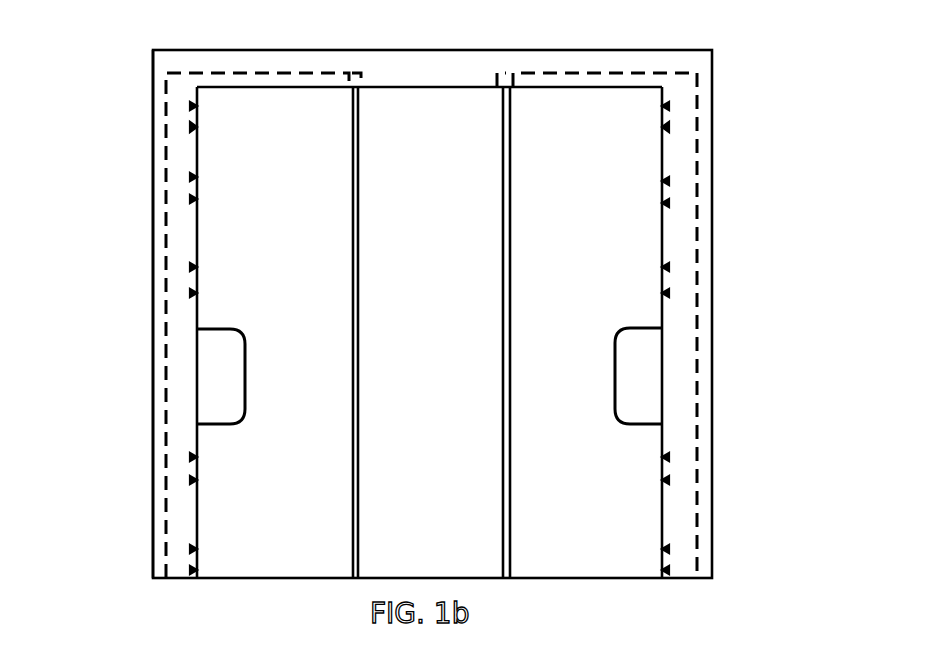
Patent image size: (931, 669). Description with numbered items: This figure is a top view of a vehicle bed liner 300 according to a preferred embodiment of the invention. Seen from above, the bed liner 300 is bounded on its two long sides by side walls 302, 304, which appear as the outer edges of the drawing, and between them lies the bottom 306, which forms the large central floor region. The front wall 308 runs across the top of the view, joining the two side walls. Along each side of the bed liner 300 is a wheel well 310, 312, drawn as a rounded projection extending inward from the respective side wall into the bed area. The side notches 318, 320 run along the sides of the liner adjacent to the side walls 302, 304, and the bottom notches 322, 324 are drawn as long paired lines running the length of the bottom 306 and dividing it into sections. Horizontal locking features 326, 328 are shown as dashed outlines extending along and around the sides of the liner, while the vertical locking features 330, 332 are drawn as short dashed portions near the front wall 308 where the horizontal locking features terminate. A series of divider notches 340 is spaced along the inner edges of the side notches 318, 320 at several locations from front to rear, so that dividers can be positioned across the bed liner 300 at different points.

The bed liner 300 is at (762, 157).
The side wall 302 is at (708, 217).
The side wall 304 is at (157, 162).
The bottom 306 is at (390, 350).
The front wall 308 is at (420, 75).
The wheel well 310 is at (648, 398).
The wheel well 312 is at (215, 377).
The side notch 318 is at (698, 343).
The side notch 320 is at (165, 428).
The bottom notch 322 is at (512, 526).
The bottom notch 324 is at (357, 516).
The horizontal locking feature 326 is at (640, 72).
The horizontal locking feature 328 is at (185, 73).
The vertical locking feature 330 is at (497, 73).
The vertical locking feature 332 is at (361, 73).
The divider notches 340 is at (190, 270).